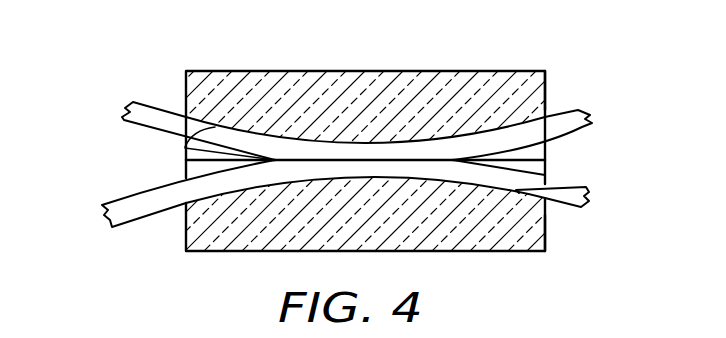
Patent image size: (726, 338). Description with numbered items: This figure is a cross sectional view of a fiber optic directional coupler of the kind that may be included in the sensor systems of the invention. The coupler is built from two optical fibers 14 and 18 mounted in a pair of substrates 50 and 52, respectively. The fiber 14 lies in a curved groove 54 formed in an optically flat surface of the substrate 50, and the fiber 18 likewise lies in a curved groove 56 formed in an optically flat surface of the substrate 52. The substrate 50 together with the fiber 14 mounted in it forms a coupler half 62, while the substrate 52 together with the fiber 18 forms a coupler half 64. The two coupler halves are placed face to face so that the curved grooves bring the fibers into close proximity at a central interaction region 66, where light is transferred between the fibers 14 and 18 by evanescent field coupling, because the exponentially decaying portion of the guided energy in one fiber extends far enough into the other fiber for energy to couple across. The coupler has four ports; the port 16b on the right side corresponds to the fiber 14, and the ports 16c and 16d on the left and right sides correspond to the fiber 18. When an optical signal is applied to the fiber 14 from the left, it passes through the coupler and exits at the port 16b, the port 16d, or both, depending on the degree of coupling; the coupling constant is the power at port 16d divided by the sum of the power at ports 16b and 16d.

The optical fiber 14 is at (369, 97).
The port 16B 16b is at (118, 114).
The port 16C 16c is at (100, 220).
The port 16D 16d is at (590, 203).
The optical fiber 18 is at (283, 217).
The substrate 50 is at (491, 71).
The substrate 52 is at (493, 252).
The curved groove 54 is at (186, 152).
The curved groove 56 is at (545, 180).
The coupler half 62 is at (556, 85).
The coupler half 64 is at (554, 230).
The interaction region 66 is at (365, 152).